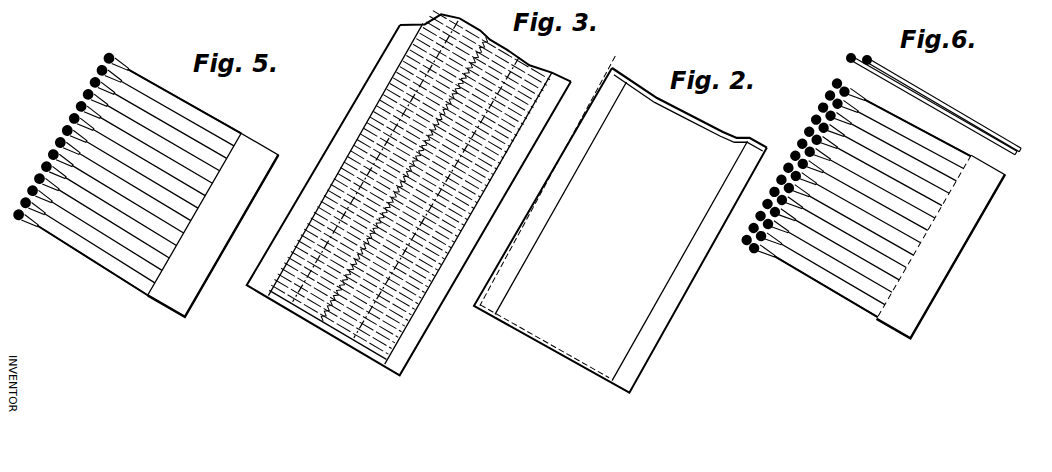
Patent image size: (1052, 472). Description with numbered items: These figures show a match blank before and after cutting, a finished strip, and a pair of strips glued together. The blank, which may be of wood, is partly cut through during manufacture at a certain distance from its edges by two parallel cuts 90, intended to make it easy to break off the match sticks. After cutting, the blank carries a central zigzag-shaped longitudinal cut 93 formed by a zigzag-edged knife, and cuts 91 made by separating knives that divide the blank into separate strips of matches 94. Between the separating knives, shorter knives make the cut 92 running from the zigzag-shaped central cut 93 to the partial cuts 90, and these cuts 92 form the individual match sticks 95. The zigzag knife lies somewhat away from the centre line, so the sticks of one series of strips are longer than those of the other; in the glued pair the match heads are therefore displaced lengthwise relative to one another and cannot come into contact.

In FIG. 3, the parallel cuts 90 is at (265, 293).
In FIG. 2, the parallel cuts 90 is at (607, 108).
In FIG. 3, the cuts 91 is at (355, 118).
In FIG. 3, the cut 92 is at (295, 307).
In FIG. 3, the zigzag-shaped longitudinal cut 93 is at (323, 322).
In FIG. 5, the strip of matches 94 is at (165, 297).
In FIG. 5, the match sticks 95 is at (93, 242).
In FIG. 6, the match sticks 95 is at (950, 118).